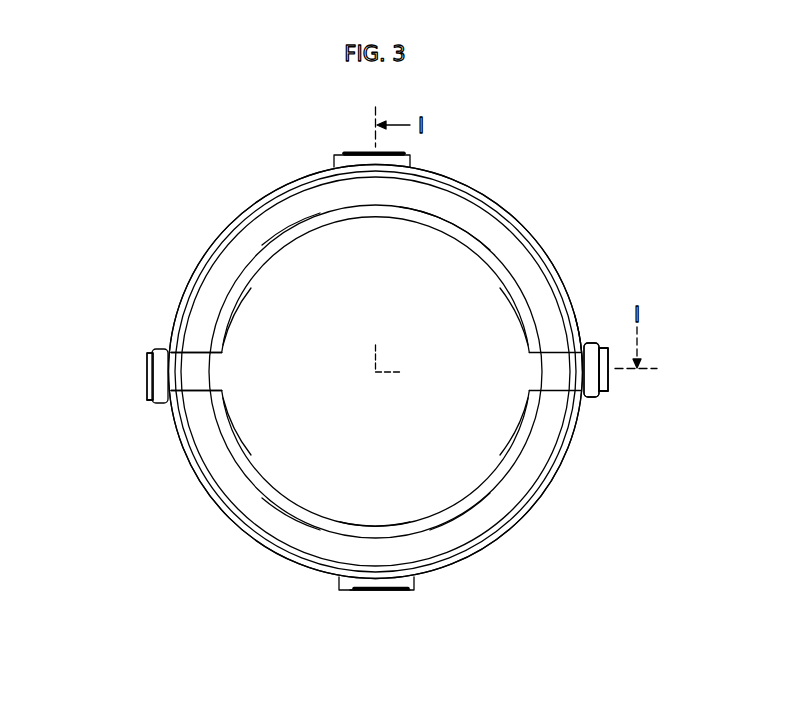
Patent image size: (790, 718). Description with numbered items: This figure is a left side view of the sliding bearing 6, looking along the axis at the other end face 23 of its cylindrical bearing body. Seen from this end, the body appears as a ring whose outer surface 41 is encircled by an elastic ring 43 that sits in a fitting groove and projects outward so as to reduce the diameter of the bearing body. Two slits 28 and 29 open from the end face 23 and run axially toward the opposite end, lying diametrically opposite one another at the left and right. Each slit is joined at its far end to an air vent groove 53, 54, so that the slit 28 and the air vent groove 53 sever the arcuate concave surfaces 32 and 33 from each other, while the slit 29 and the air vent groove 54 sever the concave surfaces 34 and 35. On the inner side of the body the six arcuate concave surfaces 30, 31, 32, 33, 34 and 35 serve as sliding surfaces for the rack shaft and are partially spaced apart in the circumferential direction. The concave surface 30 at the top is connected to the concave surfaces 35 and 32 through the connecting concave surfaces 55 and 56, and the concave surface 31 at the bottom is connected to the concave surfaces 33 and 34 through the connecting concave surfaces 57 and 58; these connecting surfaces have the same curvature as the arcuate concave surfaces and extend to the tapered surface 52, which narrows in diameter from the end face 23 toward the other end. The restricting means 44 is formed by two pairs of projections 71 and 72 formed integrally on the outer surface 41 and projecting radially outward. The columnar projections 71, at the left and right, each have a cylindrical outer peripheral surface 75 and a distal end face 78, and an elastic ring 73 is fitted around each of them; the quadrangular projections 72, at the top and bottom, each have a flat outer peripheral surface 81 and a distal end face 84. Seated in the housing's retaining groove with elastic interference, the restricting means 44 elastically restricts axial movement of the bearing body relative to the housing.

The sliding bearing 6 is at (238, 549).
The other end face 23 is at (198, 458).
The slit 28 is at (575, 316).
The slit 29 is at (192, 385).
The arcuate concave surface 30 is at (374, 217).
The arcuate concave surface 31 is at (380, 526).
The arcuate concave surface 32 is at (515, 310).
The arcuate concave surface 33 is at (515, 439).
The arcuate concave surface 34 is at (232, 427).
The arcuate concave surface 35 is at (231, 319).
The outer surface 41 is at (530, 508).
The elastic ring 43 is at (222, 232).
The restricting means 44 is at (596, 413).
The tapered surface 52 is at (455, 230).
The air vent groove 53 is at (530, 370).
The air vent groove 54 is at (214, 376).
The connecting concave surface 55 is at (293, 241).
The connecting concave surface 56 is at (414, 219).
The connecting concave surface 57 is at (446, 508).
The connecting concave surface 58 is at (308, 511).
The projection 71 is at (147, 372).
The projection 72 is at (357, 155).
The elastic ring 73 is at (163, 350).
The cylindrical outer peripheral surface 75 is at (149, 400).
The distal end face 78 is at (146, 378).
The flat outer peripheral surface 81 is at (409, 165).
The distal end face 84 is at (400, 152).